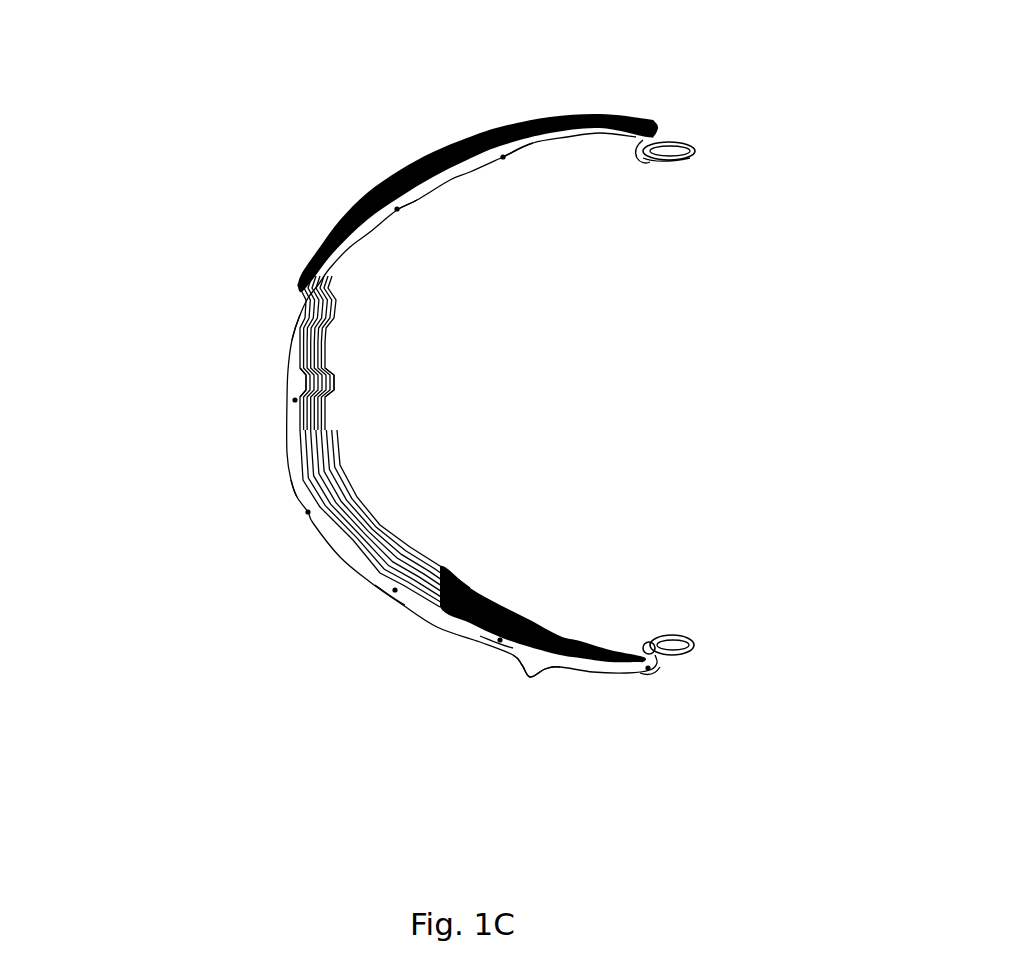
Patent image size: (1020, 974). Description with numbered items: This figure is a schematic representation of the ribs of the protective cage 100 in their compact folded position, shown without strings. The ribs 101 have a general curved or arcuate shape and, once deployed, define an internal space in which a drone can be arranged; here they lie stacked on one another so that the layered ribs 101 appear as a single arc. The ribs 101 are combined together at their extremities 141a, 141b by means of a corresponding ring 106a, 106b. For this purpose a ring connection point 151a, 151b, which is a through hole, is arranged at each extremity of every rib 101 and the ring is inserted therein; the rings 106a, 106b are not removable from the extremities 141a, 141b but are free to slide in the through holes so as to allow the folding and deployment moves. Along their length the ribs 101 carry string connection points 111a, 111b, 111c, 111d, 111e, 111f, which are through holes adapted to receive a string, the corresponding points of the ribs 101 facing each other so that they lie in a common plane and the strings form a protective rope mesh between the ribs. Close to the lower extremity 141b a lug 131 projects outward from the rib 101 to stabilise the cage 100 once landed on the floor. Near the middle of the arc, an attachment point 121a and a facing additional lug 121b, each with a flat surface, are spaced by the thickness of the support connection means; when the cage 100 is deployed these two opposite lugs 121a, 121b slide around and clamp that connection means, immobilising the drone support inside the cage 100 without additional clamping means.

The protective cage 100 is at (170, 98).
The rib 101 is at (546, 128).
The ring 106a is at (697, 147).
The ring 106b is at (698, 641).
The string connection point 111a is at (504, 160).
The string connection point 111b is at (397, 212).
The string connection point 111c is at (307, 287).
The string connection point 111d is at (307, 515).
The string connection point 111e is at (395, 590).
The string connection point 111f is at (500, 640).
The attachment point 121a is at (305, 442).
The additional lug 121b is at (310, 357).
The lug 131 is at (536, 682).
The rib extremity 141a is at (655, 148).
The rib extremity 141b is at (645, 640).
The ring connection point 151a is at (642, 160).
The ring connection point 151b is at (658, 657).